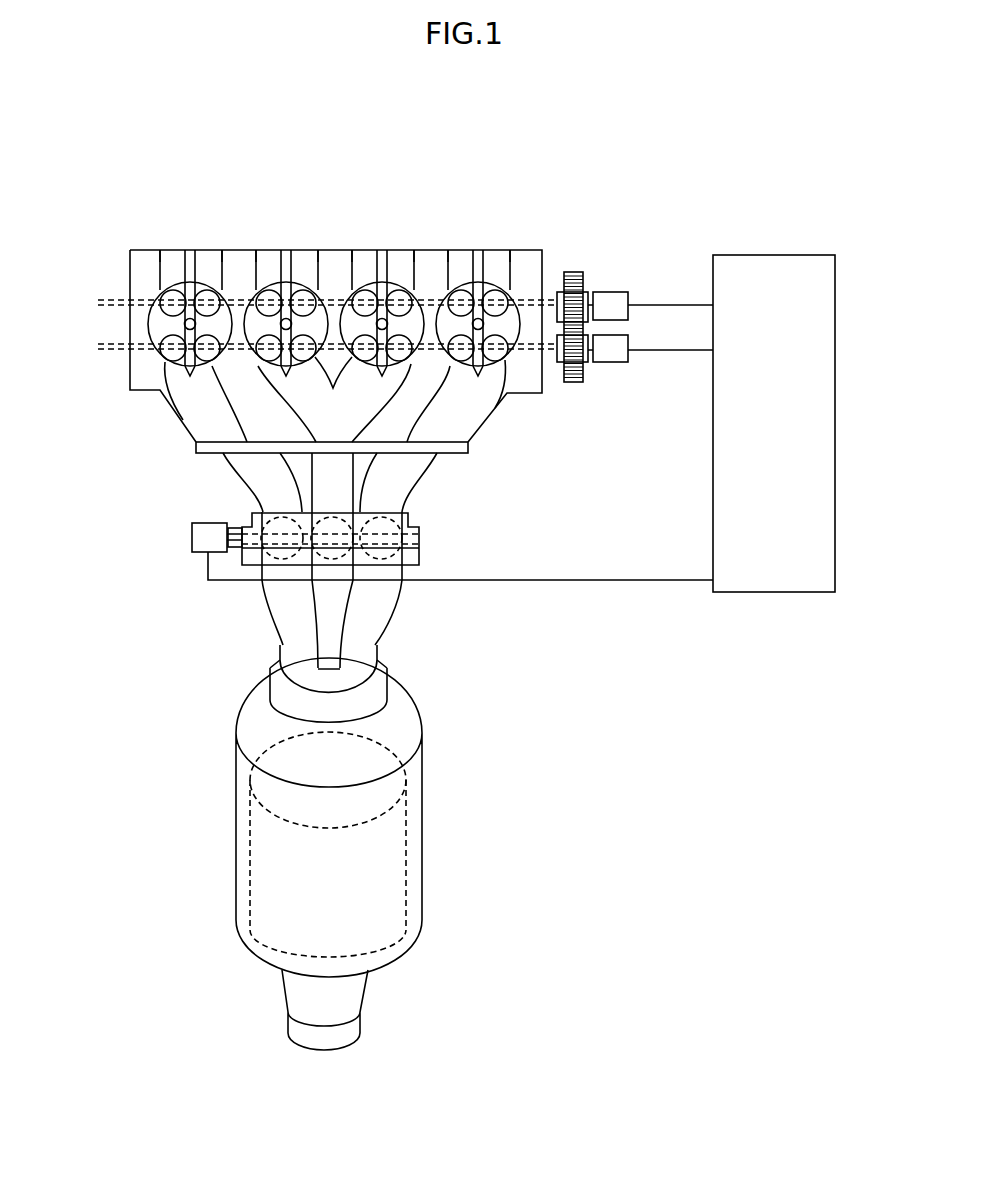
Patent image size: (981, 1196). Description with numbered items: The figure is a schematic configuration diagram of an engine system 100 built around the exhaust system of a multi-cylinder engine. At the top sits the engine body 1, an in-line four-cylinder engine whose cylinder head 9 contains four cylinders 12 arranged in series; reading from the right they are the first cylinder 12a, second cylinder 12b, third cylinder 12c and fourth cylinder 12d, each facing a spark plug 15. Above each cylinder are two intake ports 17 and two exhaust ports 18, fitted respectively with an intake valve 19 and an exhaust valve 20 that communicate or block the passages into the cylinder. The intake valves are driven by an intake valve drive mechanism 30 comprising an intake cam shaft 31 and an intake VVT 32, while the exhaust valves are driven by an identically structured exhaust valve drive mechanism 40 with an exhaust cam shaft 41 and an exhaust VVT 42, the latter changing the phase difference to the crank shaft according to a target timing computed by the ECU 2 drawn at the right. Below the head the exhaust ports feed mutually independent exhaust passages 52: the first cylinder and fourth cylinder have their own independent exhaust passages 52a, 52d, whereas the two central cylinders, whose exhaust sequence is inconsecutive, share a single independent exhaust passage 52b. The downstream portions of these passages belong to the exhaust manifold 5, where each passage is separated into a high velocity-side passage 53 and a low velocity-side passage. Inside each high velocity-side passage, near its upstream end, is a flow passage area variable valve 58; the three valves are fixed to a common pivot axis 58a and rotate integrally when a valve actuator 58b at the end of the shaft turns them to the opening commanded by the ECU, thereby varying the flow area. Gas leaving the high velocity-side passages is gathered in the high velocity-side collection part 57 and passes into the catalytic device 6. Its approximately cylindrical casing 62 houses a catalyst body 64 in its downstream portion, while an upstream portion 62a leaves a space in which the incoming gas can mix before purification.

The engine body 1 is at (588, 155).
The engine system 100 is at (701, 173).
The ECU 2 is at (762, 255).
The exhaust manifold 5 is at (505, 543).
The catalytic device 6 is at (436, 820).
The cylinder head 9 is at (500, 250).
The cylinders 12 is at (334, 324).
The first cylinder 12a is at (488, 226).
The second cylinder 12b is at (388, 226).
The third cylinder 12c is at (295, 226).
The fourth cylinder 12d is at (195, 226).
The spark plug 15 is at (150, 323).
The intake port 17 is at (208, 262).
The exhaust port 18 is at (214, 364).
The intake valve 19 is at (220, 293).
The exhaust valve 20 is at (228, 366).
The intake valve drive mechanism 30 is at (609, 248).
The intake cam shaft 31 is at (100, 298).
The intake VVT 32 is at (612, 292).
The exhaust valve drive mechanism 40 is at (612, 387).
The exhaust cam shaft 41 is at (98, 350).
The exhaust VVT 42 is at (612, 365).
The independent exhaust passages 52 is at (332, 447).
The independent exhaust passage 52a is at (437, 460).
The independent exhaust passage 52b is at (353, 465).
The independent exhaust passage 52d is at (242, 477).
The high velocity-side passage 53 is at (362, 640).
The high velocity-side collection part 57 is at (322, 679).
The flow passage area variable valve 58 is at (262, 590).
The pivot axis 58a is at (420, 538).
The valve actuator 58b is at (192, 532).
The casing 62 is at (421, 783).
The upstream portion of casing 62a is at (423, 710).
The catalyst body 64 is at (410, 893).